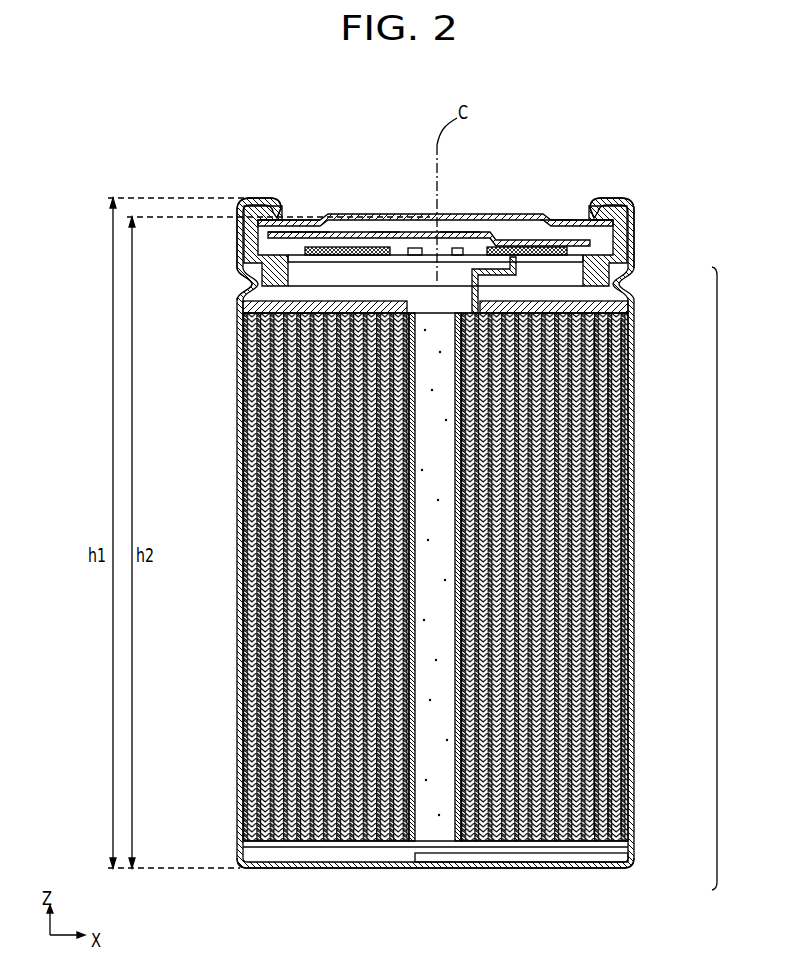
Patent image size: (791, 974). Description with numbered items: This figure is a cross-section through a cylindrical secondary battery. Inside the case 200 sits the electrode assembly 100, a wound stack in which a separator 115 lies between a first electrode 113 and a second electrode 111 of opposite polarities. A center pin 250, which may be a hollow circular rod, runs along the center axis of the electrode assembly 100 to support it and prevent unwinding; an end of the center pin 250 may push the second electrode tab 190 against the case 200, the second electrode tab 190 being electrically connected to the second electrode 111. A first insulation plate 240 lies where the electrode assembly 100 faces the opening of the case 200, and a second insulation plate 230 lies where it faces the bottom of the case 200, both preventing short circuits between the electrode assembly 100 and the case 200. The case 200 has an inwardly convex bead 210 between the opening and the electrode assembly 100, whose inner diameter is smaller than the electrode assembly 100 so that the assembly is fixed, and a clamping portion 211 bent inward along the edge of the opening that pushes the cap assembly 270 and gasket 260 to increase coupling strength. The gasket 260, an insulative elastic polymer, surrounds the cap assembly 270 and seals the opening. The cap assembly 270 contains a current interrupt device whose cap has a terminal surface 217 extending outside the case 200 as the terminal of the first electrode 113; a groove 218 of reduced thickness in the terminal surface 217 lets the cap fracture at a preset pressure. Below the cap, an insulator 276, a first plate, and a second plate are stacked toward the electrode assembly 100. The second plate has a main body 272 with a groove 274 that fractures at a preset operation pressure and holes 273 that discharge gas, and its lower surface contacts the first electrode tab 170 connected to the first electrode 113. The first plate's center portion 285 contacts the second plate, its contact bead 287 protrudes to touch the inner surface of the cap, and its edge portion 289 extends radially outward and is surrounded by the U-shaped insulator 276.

The electrode assembly 100 is at (497, 578).
The second electrode 111 is at (593, 442).
The first electrode 113 is at (608, 390).
The separator 115 is at (617, 357).
The first electrode tab 170 is at (588, 286).
The second electrode tab 190 is at (567, 862).
The case 200 is at (240, 368).
The bead 210 is at (243, 283).
The clamping portion 211 is at (265, 199).
The terminal surface 217 is at (413, 228).
The groove 218 is at (330, 220).
The second insulation plate 230 is at (338, 847).
The first insulation plate 240 is at (246, 304).
The center pin 250 is at (430, 437).
The gasket 260 is at (623, 232).
The cap assembly 270 is at (514, 211).
The main body 272 is at (367, 232).
The holes 273 is at (383, 232).
The groove 274 is at (459, 238).
The insulator 276 is at (629, 210).
The center portion 285 is at (483, 246).
The contact bead 287 is at (311, 232).
The edge portion 289 is at (294, 232).